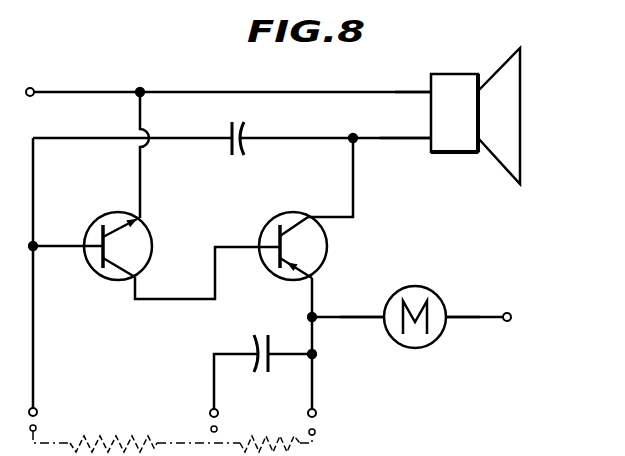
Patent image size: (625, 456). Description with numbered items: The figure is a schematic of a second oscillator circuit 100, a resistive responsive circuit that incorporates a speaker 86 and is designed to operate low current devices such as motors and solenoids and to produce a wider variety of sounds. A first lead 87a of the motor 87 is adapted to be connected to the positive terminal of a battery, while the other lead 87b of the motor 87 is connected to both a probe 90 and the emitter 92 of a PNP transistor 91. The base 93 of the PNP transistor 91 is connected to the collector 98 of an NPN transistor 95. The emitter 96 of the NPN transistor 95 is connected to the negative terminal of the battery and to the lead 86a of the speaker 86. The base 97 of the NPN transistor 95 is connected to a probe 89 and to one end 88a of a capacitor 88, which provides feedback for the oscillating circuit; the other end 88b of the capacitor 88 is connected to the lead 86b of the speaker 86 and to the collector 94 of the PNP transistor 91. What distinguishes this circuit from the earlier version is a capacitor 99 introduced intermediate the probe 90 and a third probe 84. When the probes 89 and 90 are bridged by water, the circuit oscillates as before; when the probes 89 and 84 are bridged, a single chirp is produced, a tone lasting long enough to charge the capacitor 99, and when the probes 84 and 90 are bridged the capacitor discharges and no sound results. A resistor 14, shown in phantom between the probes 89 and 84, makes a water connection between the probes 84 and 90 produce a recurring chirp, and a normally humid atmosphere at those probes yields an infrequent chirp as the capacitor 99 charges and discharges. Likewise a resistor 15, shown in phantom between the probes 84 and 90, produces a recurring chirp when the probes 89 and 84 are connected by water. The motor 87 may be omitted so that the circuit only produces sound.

The second oscillator circuit 100 is at (185, 84).
The speaker 86 is at (522, 132).
The lead of speaker 86a is at (412, 82).
The lead of speaker 86b is at (395, 142).
The capacitor 88 is at (250, 153).
The end of capacitor 88a is at (222, 142).
The other end of capacitor 88b is at (255, 137).
The NPN transistor 95 is at (130, 242).
The emitter of NPN transistor 96 is at (125, 222).
The base of NPN transistor 97 is at (91, 260).
The collector of NPN transistor 98 is at (152, 247).
The PNP transistor 91 is at (311, 249).
The emitter of PNP transistor 92 is at (322, 272).
The base of PNP transistor 93 is at (270, 263).
The collector of PNP transistor 94 is at (303, 215).
The motor 87 is at (419, 336).
The first lead of motor 87a is at (452, 320).
The other lead of motor 87b is at (363, 320).
The probe 89 is at (38, 411).
The third probe 84 is at (210, 412).
The probe 90 is at (317, 411).
The capacitor 99 is at (257, 372).
The resistor 14 is at (113, 433).
The resistor 15 is at (265, 433).